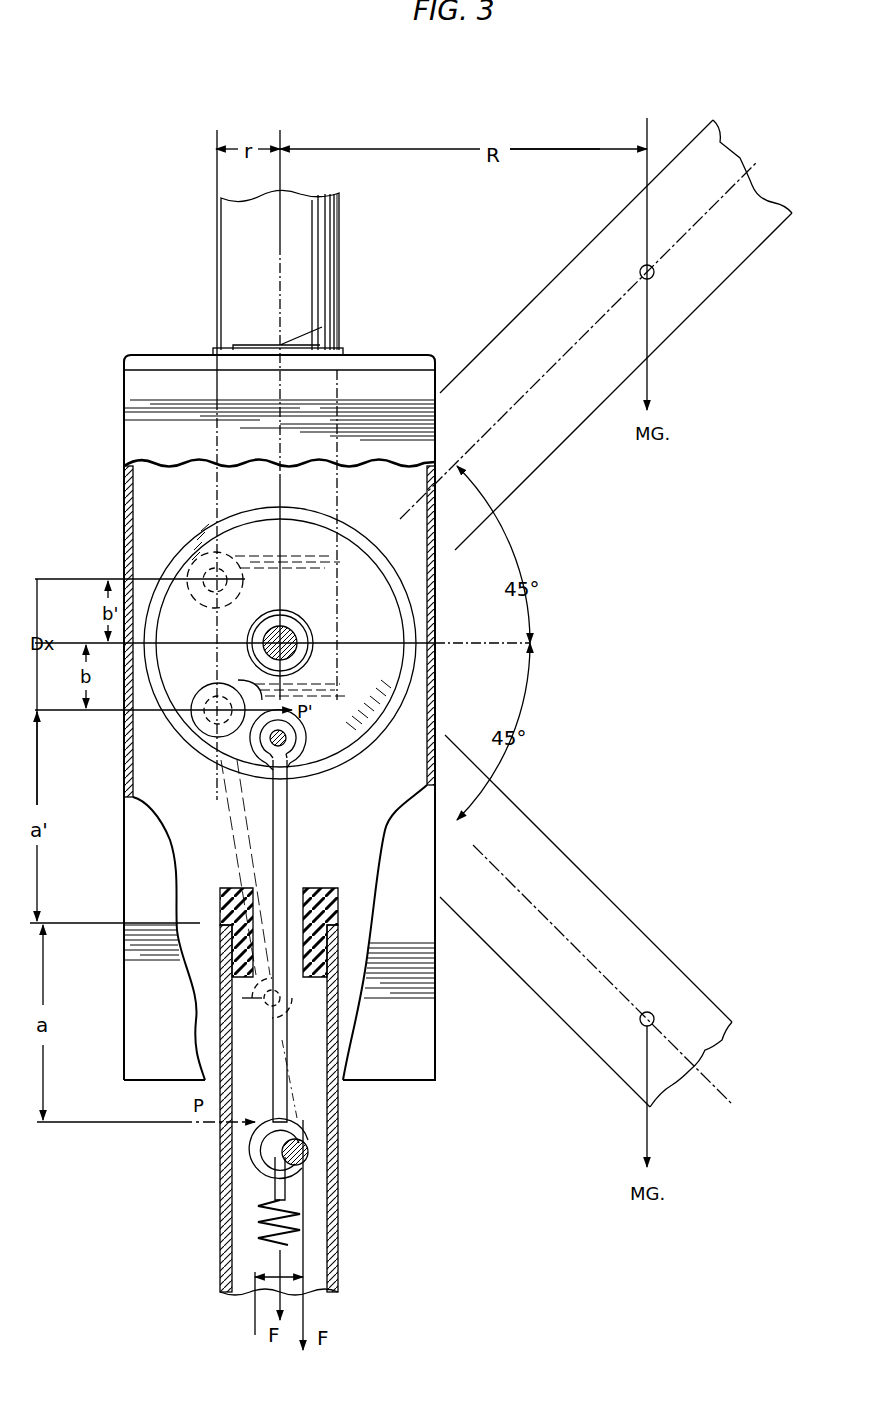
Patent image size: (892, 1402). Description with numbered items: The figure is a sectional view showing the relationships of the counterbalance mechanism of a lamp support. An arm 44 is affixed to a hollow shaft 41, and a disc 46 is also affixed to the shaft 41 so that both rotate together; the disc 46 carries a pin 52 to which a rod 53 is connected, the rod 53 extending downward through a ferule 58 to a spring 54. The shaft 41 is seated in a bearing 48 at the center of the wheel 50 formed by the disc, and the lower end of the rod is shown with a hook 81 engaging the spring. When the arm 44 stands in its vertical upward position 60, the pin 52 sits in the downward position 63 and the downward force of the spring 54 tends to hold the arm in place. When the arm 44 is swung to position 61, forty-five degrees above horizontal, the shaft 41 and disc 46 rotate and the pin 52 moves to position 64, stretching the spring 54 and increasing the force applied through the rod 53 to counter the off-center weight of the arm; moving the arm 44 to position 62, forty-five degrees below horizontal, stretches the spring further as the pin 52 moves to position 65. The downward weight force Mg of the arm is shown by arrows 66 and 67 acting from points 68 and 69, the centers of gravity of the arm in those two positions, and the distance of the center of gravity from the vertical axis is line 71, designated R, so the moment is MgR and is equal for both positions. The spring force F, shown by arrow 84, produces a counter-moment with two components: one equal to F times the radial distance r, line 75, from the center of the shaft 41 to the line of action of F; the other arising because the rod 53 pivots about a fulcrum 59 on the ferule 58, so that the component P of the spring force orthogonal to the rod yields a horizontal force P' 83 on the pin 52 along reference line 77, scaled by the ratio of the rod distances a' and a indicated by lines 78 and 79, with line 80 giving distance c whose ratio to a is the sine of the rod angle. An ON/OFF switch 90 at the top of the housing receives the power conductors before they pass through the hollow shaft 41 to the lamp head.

The shaft 41 is at (297, 652).
The arm 44 is at (322, 290).
The disc 46 is at (368, 646).
The bearing 48 is at (300, 624).
The wheel 50 is at (410, 625).
The pin 52 is at (289, 766).
The rod 53 is at (289, 868).
The spring 54 is at (232, 1240).
The ferule 58 is at (220, 910).
The fulcrum 59 is at (258, 888).
The vertical upward position 60 is at (343, 228).
The arm position 61 is at (670, 338).
The arm position 62 is at (598, 882).
The downward pin position 63 is at (284, 740).
The pin position 64 is at (202, 745).
The pin position 65 is at (212, 576).
The arrow 66 is at (647, 382).
The arrow 67 is at (647, 1137).
The center of gravity point 68 is at (654, 275).
The center of gravity point 69 is at (653, 1012).
The line R 71 is at (577, 153).
The line r 75 is at (280, 142).
The reference line 77 is at (83, 693).
The line a' 78 is at (37, 862).
The line a 79 is at (43, 1080).
The line c 80 is at (305, 1283).
The lower hook 81 is at (240, 1125).
The force P' 83 is at (255, 700).
The arrow F 84 is at (303, 1240).
The ON/OFF switch 90 is at (320, 333).